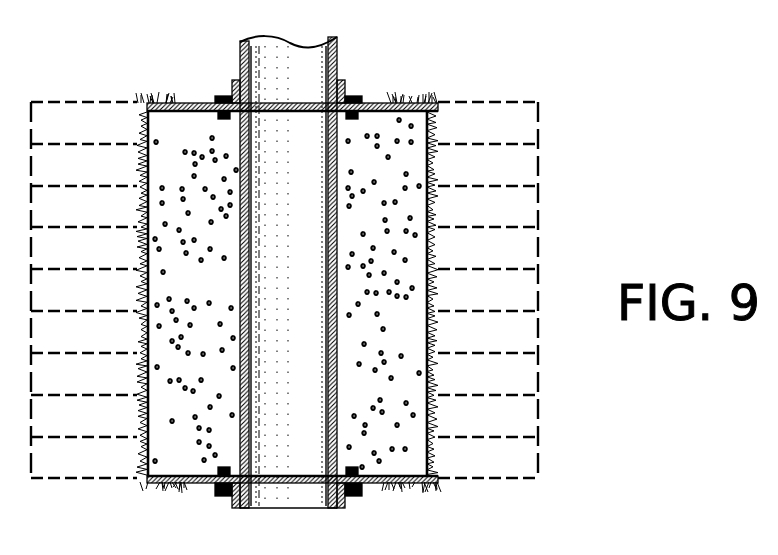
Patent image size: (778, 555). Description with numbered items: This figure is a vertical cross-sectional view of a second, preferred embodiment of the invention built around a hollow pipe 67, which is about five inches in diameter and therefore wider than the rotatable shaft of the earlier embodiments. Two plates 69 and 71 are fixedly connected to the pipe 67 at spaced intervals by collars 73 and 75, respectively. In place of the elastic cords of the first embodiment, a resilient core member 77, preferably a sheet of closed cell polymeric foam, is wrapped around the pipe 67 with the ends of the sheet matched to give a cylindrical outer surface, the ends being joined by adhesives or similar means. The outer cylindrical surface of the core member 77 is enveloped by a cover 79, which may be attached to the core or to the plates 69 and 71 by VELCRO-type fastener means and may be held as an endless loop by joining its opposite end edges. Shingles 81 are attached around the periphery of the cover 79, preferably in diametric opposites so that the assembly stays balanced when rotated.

The hollow pipe 67 is at (338, 62).
The plate 69 is at (193, 103).
The plate 71 is at (197, 485).
The collar 73 is at (230, 97).
The collar 75 is at (341, 506).
The resilient core member 77 is at (375, 125).
The cover 79 is at (440, 170).
The shingles 81 is at (538, 217).